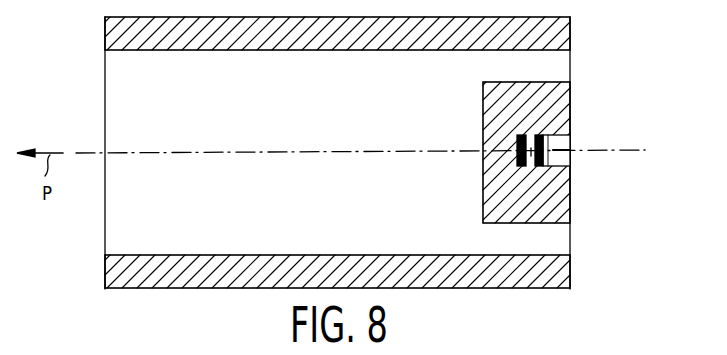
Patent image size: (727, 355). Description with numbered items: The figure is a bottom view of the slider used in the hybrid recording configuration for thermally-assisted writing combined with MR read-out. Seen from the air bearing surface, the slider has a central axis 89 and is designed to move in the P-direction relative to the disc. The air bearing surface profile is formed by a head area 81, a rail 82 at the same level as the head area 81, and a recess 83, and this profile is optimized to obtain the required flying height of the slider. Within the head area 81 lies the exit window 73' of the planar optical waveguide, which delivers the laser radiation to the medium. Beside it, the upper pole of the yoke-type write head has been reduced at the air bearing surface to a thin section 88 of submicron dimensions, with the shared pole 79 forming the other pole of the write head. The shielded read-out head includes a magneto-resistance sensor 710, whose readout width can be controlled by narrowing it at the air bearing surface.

The rail 82 is at (125, 35).
The recess 83 is at (125, 120).
The head area 81 is at (535, 200).
The shared pole 79 is at (536, 133).
The exit window 73' is at (580, 127).
The thin section 88 is at (562, 148).
The sensor 710 is at (530, 164).
The central axis 89 is at (371, 151).